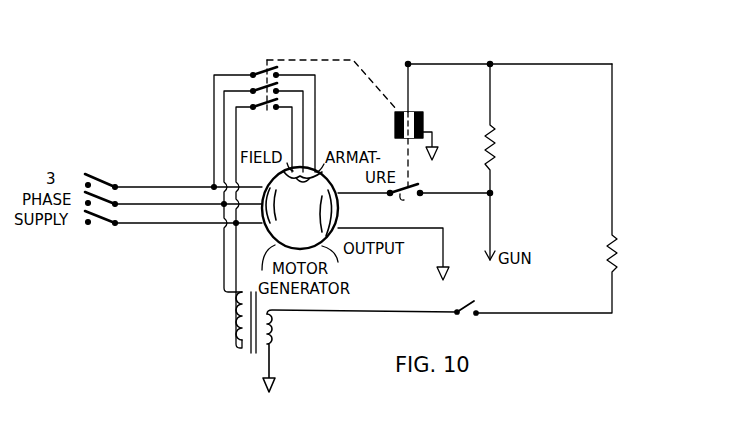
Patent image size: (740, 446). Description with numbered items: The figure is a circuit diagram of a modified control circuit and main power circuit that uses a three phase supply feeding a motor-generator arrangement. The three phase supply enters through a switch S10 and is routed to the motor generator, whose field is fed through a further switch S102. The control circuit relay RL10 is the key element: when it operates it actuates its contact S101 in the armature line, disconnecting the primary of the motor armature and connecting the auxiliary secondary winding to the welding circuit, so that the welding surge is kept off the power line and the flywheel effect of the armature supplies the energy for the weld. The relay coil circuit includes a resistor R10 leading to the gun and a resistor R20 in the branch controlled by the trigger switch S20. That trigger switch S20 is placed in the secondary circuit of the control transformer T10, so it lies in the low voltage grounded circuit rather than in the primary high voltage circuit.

The three phase supply switch S10 is at (104, 188).
The field switch S102 is at (242, 73).
The control circuit relay RL10 is at (394, 110).
The relay contact switch S101 is at (406, 203).
The resistor R10 is at (494, 166).
The resistor R20 is at (565, 188).
The switch S20 is at (463, 318).
The transformer T10 is at (256, 355).